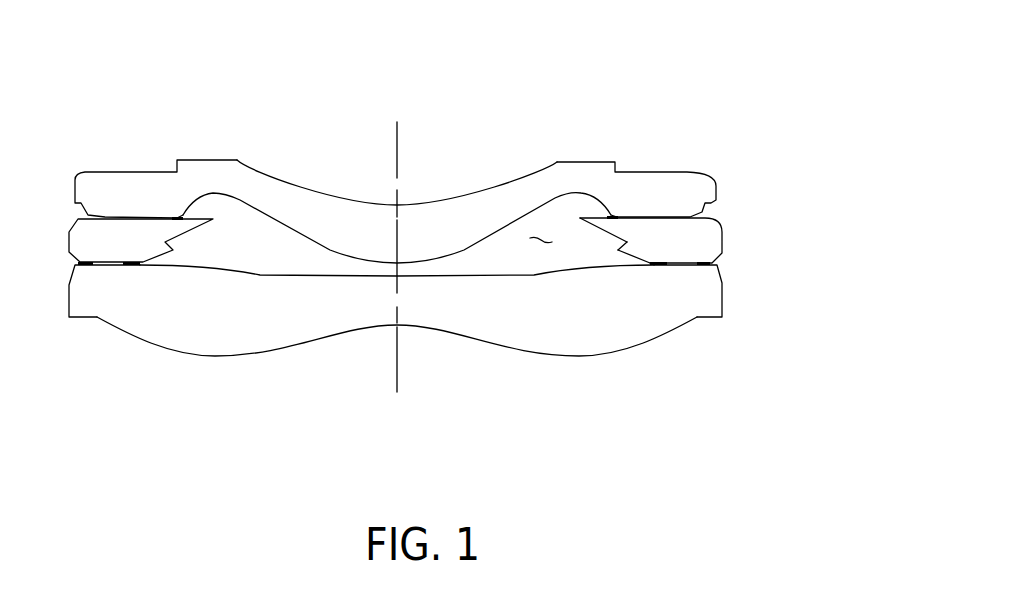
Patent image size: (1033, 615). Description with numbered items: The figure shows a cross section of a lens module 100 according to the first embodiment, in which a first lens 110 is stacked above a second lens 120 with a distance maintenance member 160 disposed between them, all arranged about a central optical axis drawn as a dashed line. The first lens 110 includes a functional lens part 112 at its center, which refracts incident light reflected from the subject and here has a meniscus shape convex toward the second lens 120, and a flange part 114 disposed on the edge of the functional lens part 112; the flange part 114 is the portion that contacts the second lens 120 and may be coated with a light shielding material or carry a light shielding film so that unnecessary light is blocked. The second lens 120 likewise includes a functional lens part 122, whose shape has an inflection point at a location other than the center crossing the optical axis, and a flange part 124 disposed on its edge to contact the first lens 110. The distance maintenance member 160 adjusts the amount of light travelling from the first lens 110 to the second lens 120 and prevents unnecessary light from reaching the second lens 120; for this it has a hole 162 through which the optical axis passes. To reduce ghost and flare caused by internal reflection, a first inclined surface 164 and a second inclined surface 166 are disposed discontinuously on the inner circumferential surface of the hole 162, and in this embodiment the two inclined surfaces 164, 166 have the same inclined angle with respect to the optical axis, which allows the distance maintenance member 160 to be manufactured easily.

The lens module 100 is at (693, 86).
The first lens 110 is at (703, 200).
The functional lens part 112 is at (337, 197).
The flange part 114 is at (138, 172).
The second lens 120 is at (702, 298).
The functional lens part 122 is at (350, 336).
The flange part 124 is at (80, 318).
The distance maintenance member 160 is at (703, 243).
The hole 162 is at (545, 237).
The first inclined surface 164 is at (603, 230).
The second inclined surface 166 is at (622, 248).